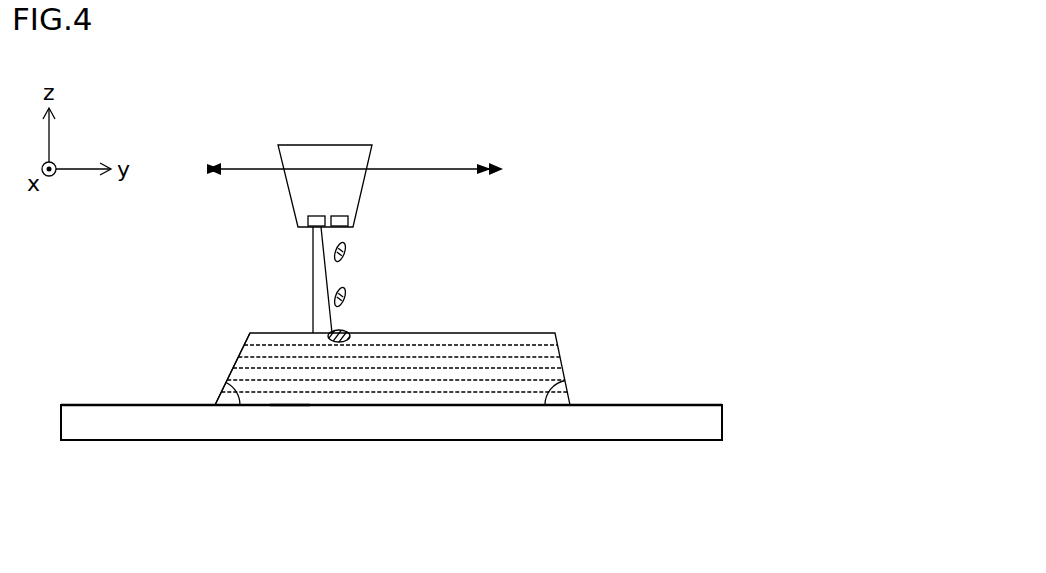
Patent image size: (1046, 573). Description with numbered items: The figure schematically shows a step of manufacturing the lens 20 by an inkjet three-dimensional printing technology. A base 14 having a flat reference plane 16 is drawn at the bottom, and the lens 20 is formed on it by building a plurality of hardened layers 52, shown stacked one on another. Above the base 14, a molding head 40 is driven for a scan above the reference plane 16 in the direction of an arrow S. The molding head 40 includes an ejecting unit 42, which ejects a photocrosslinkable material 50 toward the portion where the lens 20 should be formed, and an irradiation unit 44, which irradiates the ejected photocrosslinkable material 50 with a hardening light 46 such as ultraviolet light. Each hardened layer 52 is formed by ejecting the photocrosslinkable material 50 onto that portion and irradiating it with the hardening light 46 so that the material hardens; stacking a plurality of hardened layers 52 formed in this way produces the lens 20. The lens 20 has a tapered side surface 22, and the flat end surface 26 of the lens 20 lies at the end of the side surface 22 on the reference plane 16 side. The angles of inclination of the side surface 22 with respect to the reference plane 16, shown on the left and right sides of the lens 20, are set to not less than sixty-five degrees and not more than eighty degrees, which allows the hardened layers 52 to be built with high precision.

The base 14 is at (722, 419).
The reference plane 16 is at (700, 404).
The lens 20 is at (541, 253).
The tapered side surface 22 is at (557, 348).
The end surface 26 is at (287, 407).
The molding head 40 is at (325, 156).
The ejecting unit 42 is at (341, 215).
The irradiation unit 44 is at (318, 216).
The hardening light 46 is at (312, 273).
The photocrosslinkable material 50 is at (343, 333).
The hardened layer 52 is at (235, 358).
The arrow S is at (445, 168).